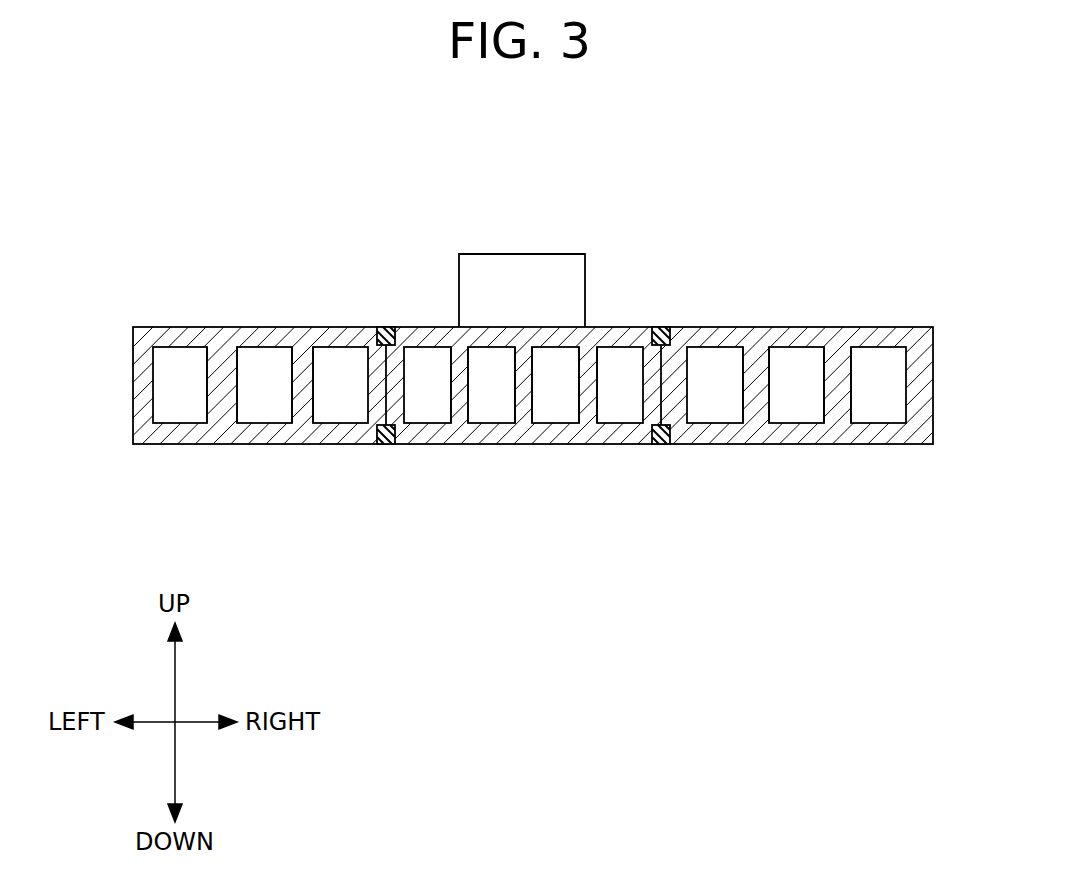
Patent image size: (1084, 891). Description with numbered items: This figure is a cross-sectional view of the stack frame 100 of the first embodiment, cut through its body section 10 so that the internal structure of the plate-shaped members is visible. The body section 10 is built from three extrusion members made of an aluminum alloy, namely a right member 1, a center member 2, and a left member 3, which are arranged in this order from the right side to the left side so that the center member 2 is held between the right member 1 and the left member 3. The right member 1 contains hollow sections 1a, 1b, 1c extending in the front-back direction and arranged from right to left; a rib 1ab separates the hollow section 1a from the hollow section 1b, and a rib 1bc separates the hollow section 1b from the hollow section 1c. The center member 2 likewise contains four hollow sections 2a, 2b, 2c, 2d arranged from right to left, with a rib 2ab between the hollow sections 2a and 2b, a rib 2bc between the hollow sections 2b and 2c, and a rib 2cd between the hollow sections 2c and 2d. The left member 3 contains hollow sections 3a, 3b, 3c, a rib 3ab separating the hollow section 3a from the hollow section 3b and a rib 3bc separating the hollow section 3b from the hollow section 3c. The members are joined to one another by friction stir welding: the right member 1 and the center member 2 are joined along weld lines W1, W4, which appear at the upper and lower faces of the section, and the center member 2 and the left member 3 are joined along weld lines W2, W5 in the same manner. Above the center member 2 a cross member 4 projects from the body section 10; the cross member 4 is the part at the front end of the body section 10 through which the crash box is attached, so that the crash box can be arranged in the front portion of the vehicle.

The stack frame 100 is at (918, 184).
The body section 10 is at (917, 327).
The cross member 4 is at (459, 268).
The left member 3 is at (284, 327).
The hollow section 3a is at (349, 424).
The hollow section 3b is at (272, 424).
The hollow section 3c is at (184, 424).
The rib 3ab is at (307, 378).
The rib 3bc is at (222, 378).
The center member 2 is at (527, 327).
The hollow section 2a is at (627, 424).
The hollow section 2b is at (561, 424).
The hollow section 2c is at (498, 424).
The hollow section 2d is at (432, 424).
The rib 2ab is at (590, 378).
The rib 2bc is at (523, 378).
The rib 2cd is at (452, 382).
The right member 1 is at (824, 327).
The hollow section 1a is at (886, 424).
The hollow section 1b is at (801, 424).
The hollow section 1c is at (726, 424).
The rib 1ab is at (847, 378).
The rib 1bc is at (770, 378).
The weld line W1 is at (660, 327).
The weld line W2 is at (386, 327).
The weld line W4 is at (659, 444).
The weld line W5 is at (386, 444).